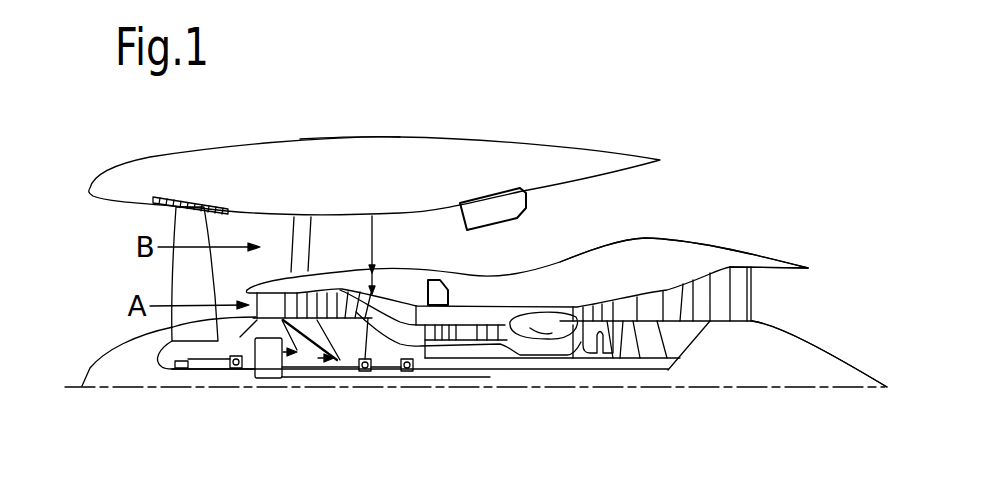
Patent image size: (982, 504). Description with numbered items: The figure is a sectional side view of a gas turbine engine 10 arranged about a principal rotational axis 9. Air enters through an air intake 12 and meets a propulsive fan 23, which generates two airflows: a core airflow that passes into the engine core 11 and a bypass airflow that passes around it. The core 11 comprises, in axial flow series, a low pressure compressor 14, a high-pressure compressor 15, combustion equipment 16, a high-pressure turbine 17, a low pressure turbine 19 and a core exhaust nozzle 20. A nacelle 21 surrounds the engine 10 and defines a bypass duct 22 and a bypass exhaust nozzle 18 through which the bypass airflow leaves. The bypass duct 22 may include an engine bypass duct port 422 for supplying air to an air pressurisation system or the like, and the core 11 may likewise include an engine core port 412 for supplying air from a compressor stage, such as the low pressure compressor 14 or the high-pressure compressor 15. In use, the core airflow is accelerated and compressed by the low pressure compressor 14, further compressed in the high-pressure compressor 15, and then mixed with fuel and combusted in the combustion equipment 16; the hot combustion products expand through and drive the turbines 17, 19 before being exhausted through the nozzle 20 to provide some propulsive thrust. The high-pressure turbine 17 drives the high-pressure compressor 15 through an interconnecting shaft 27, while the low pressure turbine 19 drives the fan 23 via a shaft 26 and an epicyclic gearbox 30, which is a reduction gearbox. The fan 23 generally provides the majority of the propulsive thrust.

The principal rotational axis 9 is at (717, 387).
The gas turbine engine 10 is at (156, 157).
The core 11 is at (522, 288).
The air intake 12 is at (103, 238).
The low pressure compressor 14 is at (332, 298).
The high-pressure compressor 15 is at (464, 305).
The combustion equipment 16 is at (547, 332).
The high-pressure turbine 17 is at (597, 314).
The bypass exhaust nozzle 18 is at (713, 198).
The low pressure turbine 19 is at (720, 284).
The core exhaust nozzle 20 is at (787, 305).
The nacelle 21 is at (397, 152).
The bypass duct 22 is at (639, 211).
The propulsive fan 23 is at (176, 277).
The shaft 26 is at (467, 373).
The interconnecting shaft 27 is at (500, 363).
The epicyclic gearbox 30 is at (270, 378).
The engine core port 412 is at (438, 297).
The engine bypass duct port 422 is at (493, 207).